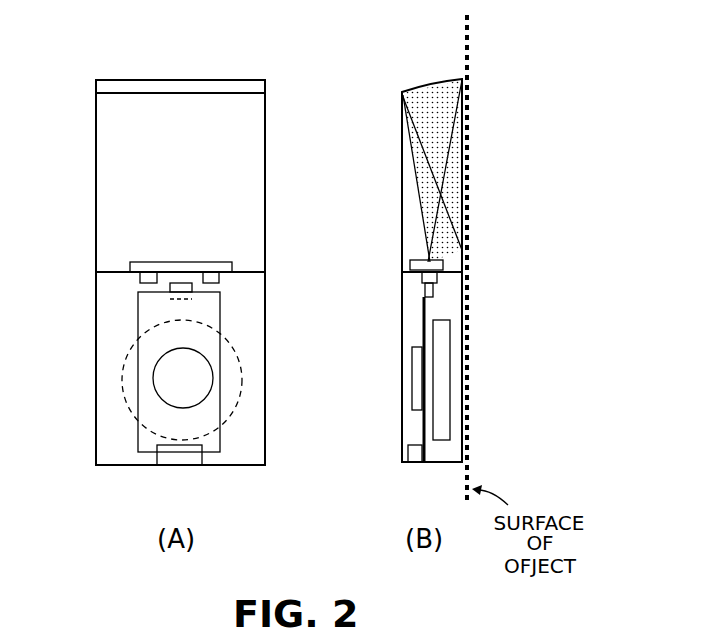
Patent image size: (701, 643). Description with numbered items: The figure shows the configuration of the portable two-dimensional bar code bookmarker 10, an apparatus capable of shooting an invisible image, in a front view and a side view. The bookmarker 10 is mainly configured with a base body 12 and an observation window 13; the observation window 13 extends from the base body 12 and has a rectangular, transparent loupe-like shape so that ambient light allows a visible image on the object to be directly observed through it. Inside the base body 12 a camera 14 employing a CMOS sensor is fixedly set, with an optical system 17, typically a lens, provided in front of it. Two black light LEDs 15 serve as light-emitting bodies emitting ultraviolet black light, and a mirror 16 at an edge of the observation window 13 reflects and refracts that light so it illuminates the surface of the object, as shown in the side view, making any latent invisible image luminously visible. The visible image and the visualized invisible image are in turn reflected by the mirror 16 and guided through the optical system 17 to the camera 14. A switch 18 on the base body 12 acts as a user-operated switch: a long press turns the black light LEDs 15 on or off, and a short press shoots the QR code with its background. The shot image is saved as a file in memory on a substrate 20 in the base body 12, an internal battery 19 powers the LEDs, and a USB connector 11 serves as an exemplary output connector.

The portable 2D bar code bookmarker 10 is at (51, 130).
The USB connector 11 is at (183, 455).
The base body 12 is at (265, 430).
The observation window 13 is at (192, 200).
The camera 14 is at (138, 294).
The black light LED 15 is at (152, 262).
The mirror 16 is at (180, 79).
The optical system 17 is at (130, 266).
The switch 18 is at (193, 370).
The battery 19 is at (445, 368).
The substrate 20 is at (138, 318).